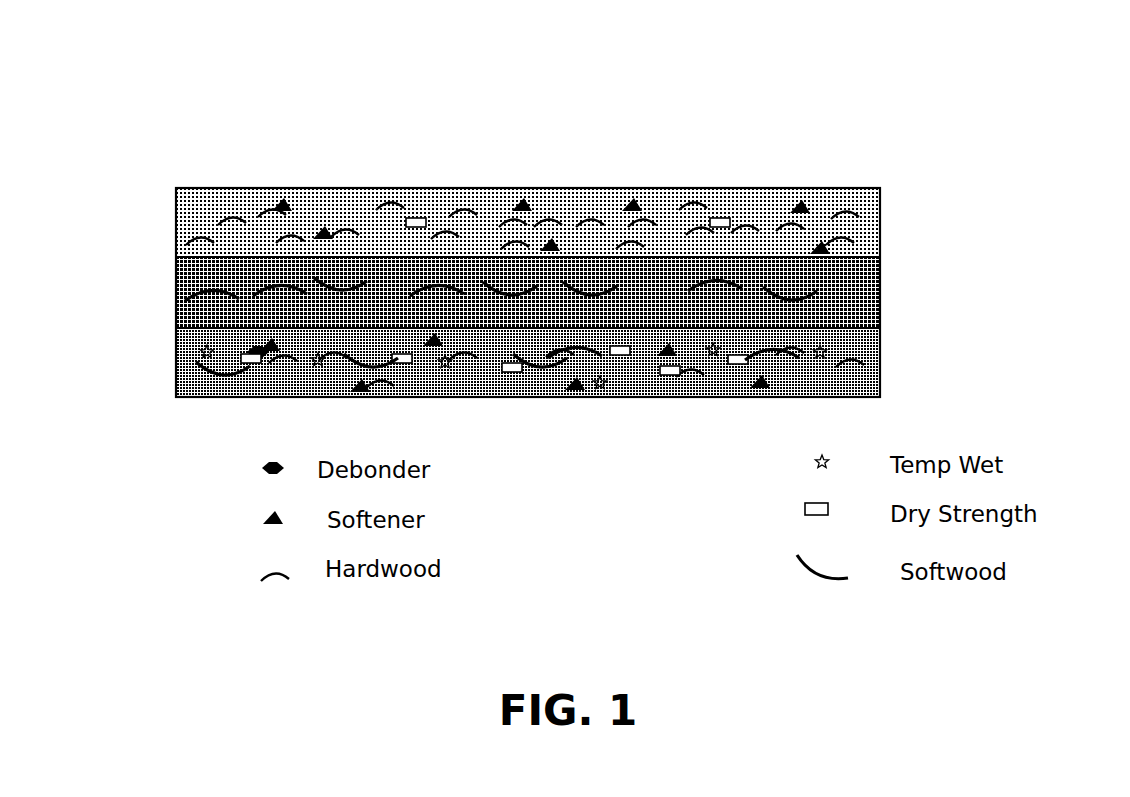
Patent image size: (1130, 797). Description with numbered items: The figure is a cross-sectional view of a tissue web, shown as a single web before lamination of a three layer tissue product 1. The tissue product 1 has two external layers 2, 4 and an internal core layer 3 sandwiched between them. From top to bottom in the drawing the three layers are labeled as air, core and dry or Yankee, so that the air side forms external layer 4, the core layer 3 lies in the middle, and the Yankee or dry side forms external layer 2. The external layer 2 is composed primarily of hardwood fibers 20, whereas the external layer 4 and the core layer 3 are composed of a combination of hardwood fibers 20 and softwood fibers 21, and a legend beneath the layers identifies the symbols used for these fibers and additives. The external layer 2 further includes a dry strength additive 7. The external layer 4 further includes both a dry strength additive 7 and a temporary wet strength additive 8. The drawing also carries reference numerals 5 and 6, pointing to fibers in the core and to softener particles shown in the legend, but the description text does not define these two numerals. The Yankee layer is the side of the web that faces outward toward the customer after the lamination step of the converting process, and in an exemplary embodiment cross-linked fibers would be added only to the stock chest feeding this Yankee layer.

The tissue product 1 is at (132, 127).
The external layer 2 is at (880, 210).
The core layer 3 is at (880, 290).
The external layer 4 is at (882, 368).
The softwood fibers 5 is at (283, 270).
The softener 6 is at (440, 282).
The dry strength additive 7 is at (720, 218).
The temporary wet strength additive 8 is at (448, 370).
The hardwood fibers 20 is at (400, 204).
The softwood fibers 21 is at (185, 297).